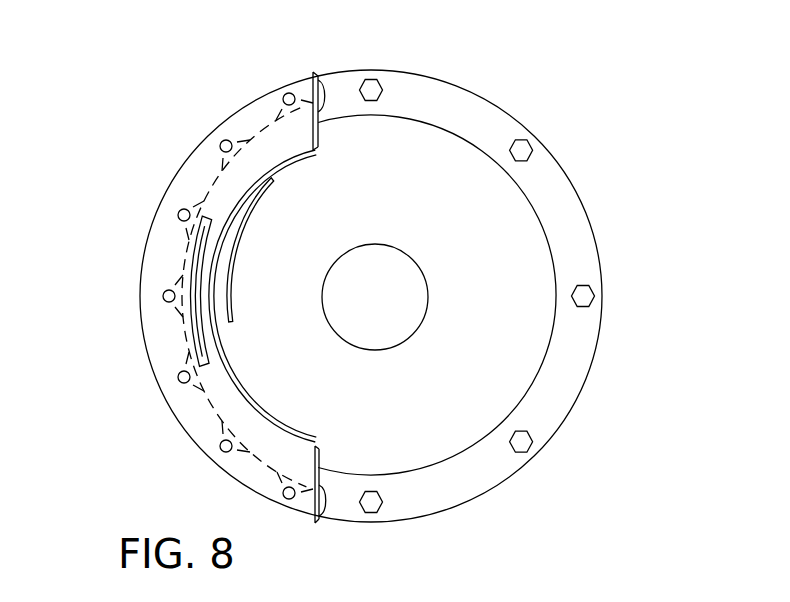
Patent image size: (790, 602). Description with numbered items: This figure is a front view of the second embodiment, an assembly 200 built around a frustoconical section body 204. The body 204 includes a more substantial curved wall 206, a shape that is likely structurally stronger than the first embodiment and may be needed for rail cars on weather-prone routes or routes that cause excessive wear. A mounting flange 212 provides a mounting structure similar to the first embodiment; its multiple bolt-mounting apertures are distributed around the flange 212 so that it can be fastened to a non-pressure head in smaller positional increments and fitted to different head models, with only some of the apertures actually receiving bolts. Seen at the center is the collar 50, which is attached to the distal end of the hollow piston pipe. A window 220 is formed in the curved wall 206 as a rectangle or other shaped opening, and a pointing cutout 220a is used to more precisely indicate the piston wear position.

The collar 50 is at (424, 277).
The seal assembly 200 is at (223, 66).
The frustoconical section body 204 is at (146, 182).
The curved wall 206 is at (316, 446).
The mounting flange 212 is at (321, 96).
The window 220 is at (193, 338).
The pointing cutout 220a is at (334, 223).